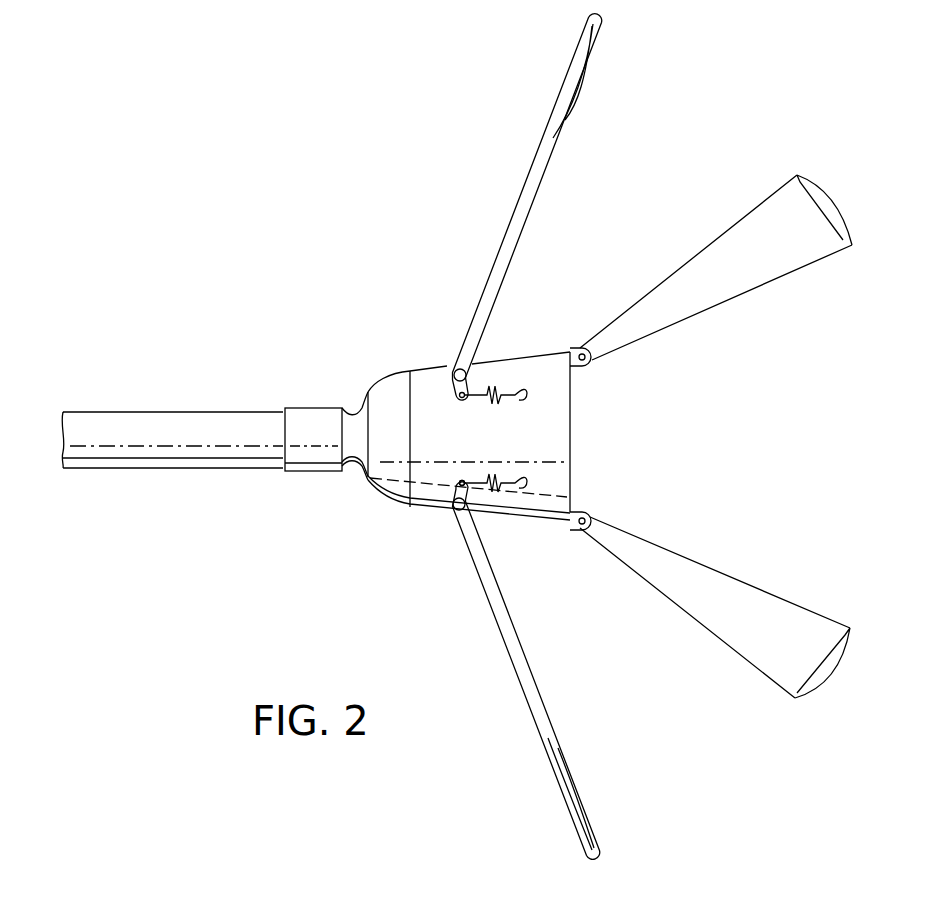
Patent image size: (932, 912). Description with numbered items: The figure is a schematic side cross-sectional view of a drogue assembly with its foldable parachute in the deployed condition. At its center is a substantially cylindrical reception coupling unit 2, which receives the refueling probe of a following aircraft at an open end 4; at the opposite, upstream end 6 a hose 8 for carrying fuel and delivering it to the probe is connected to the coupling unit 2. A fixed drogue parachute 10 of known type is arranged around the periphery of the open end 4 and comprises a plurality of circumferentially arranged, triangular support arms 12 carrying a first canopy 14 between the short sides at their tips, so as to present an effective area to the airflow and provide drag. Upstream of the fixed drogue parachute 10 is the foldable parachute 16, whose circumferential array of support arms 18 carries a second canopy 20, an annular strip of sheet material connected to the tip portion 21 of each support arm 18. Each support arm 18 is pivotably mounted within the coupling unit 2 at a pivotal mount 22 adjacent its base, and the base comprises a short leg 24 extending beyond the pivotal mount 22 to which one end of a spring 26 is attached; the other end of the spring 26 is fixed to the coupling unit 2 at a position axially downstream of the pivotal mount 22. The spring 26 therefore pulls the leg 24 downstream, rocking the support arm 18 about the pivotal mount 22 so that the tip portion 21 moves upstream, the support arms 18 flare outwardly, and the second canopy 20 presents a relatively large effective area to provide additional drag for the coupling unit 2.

The reception coupling unit 2 is at (440, 449).
The open end 4 is at (577, 440).
The upstream end 6 is at (388, 397).
The hose 8 is at (251, 458).
The fixed drogue parachute 10 is at (743, 607).
The support arms 12 is at (703, 583).
The first canopy 14 is at (847, 657).
The foldable parachute 16 is at (504, 670).
The support arms 18 is at (517, 633).
The second canopy 20 is at (552, 207).
The tip portion 21 is at (573, 73).
The pivotal mount 22 is at (452, 510).
The short leg 24 is at (470, 497).
The spring 26 is at (498, 464).